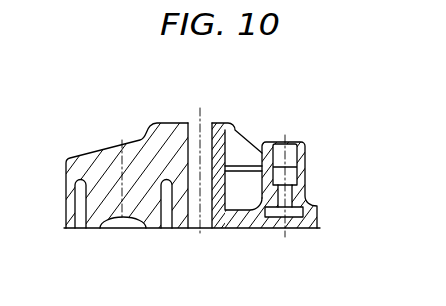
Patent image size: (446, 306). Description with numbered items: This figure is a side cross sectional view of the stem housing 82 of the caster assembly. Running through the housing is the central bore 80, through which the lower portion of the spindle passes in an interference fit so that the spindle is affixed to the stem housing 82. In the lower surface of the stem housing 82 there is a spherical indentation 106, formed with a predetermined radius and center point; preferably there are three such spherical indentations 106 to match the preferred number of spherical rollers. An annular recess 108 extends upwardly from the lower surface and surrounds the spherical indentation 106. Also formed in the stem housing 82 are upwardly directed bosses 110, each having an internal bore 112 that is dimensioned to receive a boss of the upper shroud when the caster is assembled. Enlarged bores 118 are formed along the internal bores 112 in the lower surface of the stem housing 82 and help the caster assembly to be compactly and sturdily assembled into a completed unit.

The central bore 80 is at (193, 120).
The stem housing 82 is at (143, 136).
The spherical indentation 106 is at (125, 219).
The annular recess 108 is at (79, 223).
The upwardly directed boss 110 is at (298, 181).
The internal bore 112 is at (293, 197).
The enlarged bore 118 is at (291, 232).